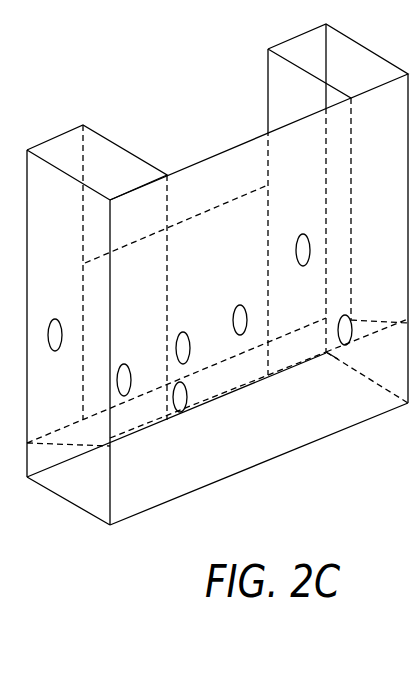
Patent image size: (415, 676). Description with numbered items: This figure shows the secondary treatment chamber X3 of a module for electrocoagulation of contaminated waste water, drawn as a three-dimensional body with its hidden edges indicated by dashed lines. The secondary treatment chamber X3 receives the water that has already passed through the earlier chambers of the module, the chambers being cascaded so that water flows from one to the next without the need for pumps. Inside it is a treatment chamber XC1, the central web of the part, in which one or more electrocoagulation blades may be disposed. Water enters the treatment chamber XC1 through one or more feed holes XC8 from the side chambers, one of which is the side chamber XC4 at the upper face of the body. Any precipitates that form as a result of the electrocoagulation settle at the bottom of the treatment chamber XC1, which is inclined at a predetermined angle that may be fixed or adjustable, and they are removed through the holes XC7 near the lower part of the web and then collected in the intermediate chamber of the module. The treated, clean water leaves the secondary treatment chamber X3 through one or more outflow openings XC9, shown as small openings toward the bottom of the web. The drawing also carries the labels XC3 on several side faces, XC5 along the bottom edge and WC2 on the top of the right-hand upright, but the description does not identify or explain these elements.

The secondary treatment chamber X3 is at (217, 272).
The treatment chamber XC1 is at (218, 212).
The side faces XC3 is at (264, 259).
The side chamber XC4 is at (217, 112).
The bottom edge XC5 is at (217, 421).
The holes XC7 is at (238, 308).
The feed holes XC8 is at (302, 234).
The outflow openings XC9 is at (347, 318).
The width of top face WC2 is at (350, 66).